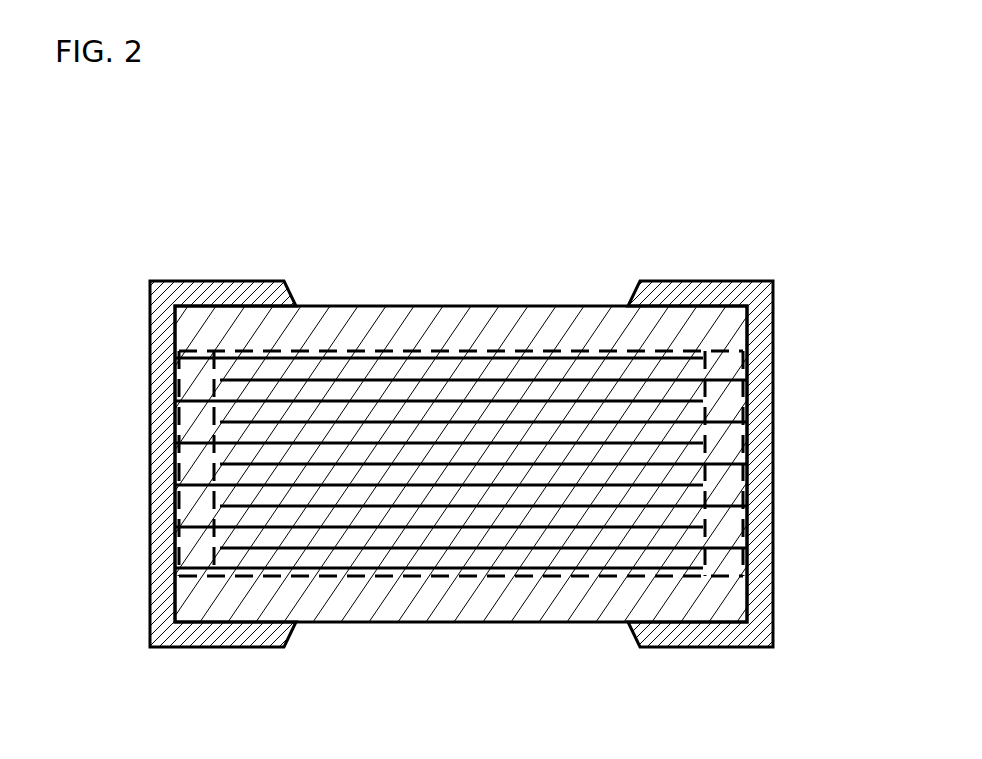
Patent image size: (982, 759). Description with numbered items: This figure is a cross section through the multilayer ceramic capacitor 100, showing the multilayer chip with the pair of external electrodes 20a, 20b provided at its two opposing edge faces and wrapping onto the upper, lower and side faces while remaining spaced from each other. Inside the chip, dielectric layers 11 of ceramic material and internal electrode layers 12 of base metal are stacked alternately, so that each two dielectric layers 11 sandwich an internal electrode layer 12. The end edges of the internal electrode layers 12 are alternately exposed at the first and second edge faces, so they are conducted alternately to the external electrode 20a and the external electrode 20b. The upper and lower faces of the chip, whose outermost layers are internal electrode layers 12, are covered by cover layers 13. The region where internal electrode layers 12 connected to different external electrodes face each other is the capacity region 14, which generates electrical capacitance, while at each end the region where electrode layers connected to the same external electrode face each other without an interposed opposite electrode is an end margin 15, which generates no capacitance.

The multilayer ceramic capacitor 100 is at (677, 225).
The external electrode 20a is at (175, 281).
The external electrode 20b is at (738, 281).
The dielectric layer 11 is at (577, 533).
The internal electrode layer 12 is at (450, 507).
The cover layer 13 is at (360, 318).
The capacity region 14 is at (483, 350).
The end margin 15 is at (198, 351).